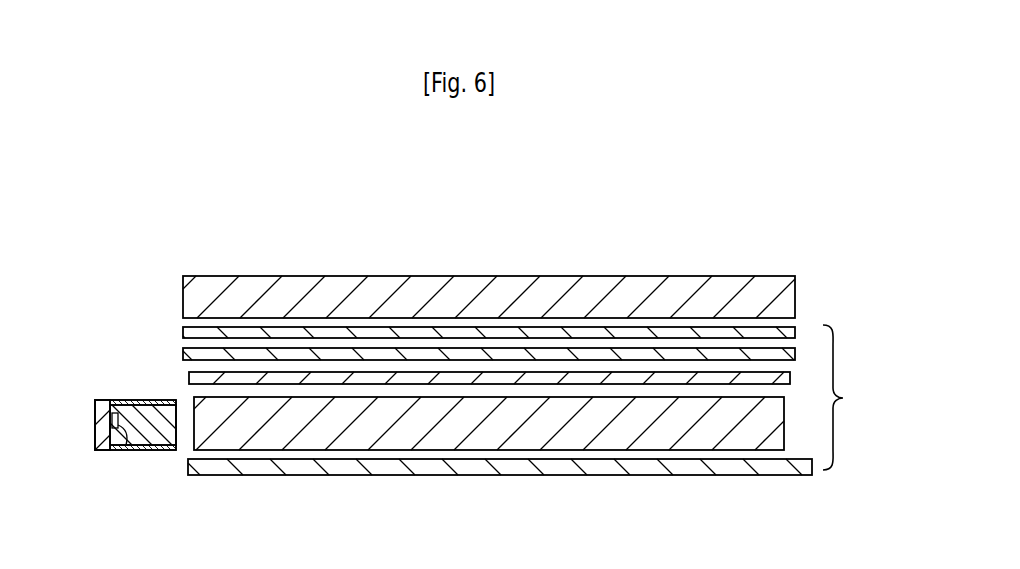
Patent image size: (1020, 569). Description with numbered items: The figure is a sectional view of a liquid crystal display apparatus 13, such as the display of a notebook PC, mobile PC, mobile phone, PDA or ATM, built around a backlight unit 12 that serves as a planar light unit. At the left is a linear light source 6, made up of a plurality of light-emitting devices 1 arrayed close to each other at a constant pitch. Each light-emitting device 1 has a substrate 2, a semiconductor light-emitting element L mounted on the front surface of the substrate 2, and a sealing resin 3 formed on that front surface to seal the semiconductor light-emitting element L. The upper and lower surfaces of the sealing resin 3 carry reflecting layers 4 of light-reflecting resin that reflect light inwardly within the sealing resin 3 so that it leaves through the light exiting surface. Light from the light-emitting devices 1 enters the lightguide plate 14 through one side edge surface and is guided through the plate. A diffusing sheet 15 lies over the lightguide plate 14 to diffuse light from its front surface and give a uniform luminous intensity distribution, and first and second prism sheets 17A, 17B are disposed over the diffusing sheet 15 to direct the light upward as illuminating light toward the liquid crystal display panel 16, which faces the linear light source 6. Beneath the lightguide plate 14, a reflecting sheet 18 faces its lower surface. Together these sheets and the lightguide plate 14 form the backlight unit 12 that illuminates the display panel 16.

The light-emitting device 1 is at (125, 396).
The substrate 2 is at (96, 425).
The sealing resin 3 is at (143, 435).
The reflecting layers 4 is at (156, 399).
The linear light source 6 is at (92, 391).
The semiconductor light-emitting element L is at (120, 443).
The backlight unit 12 is at (849, 397).
The liquid crystal display apparatus 13 is at (654, 236).
The lightguide plate 14 is at (236, 448).
The diffusing sheet 15 is at (697, 383).
The liquid crystal display panel 16 is at (566, 276).
The first prism sheet 17A is at (615, 358).
The second prism sheet 17B is at (550, 338).
The reflecting sheet 18 is at (452, 476).